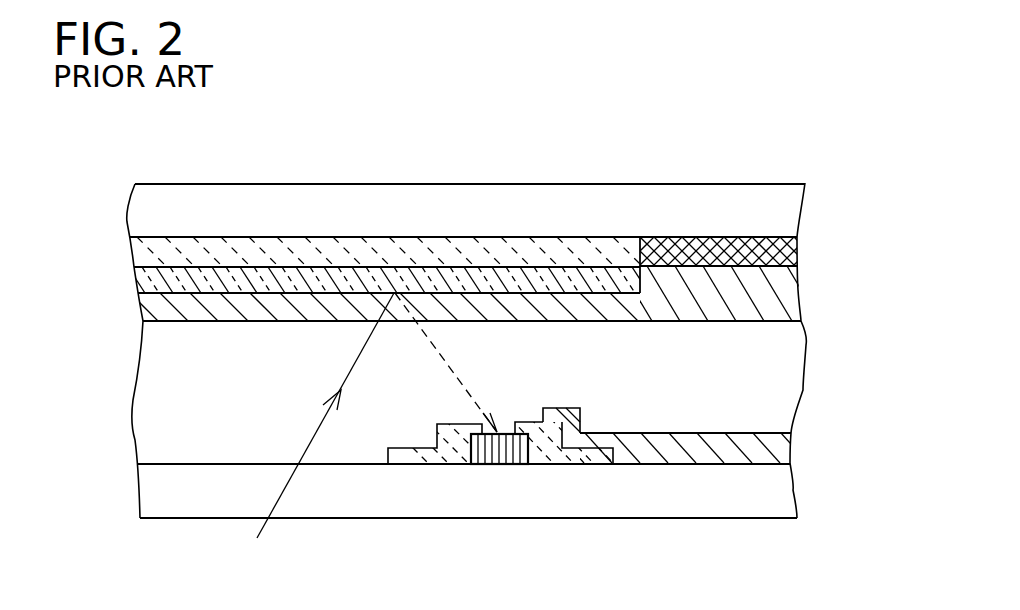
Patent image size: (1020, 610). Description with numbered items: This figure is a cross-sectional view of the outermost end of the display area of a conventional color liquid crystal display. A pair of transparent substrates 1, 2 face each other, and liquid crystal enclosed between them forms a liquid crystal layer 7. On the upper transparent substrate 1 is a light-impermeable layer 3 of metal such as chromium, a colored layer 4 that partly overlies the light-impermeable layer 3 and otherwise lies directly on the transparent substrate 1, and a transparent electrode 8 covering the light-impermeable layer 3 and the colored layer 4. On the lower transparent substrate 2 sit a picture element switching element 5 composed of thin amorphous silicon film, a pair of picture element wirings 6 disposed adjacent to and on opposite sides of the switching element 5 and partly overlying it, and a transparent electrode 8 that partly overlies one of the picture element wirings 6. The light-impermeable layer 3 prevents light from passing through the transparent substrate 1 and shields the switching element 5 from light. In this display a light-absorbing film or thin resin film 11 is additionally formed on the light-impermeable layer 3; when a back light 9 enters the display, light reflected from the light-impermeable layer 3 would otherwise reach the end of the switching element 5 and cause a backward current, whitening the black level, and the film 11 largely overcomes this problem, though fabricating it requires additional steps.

The transparent substrate 1 is at (793, 213).
The transparent substrate 2 is at (790, 487).
The light-impermeable layer 3 is at (583, 246).
The colored layer 4 is at (798, 252).
The picture element switching element 5 is at (510, 464).
The picture element wiring 6 is at (462, 464).
The liquid crystal layer 7 is at (793, 362).
The transparent electrode 8 is at (793, 290).
The back light 9 is at (362, 437).
The light-absorbing film or thin resin film 11 is at (433, 268).